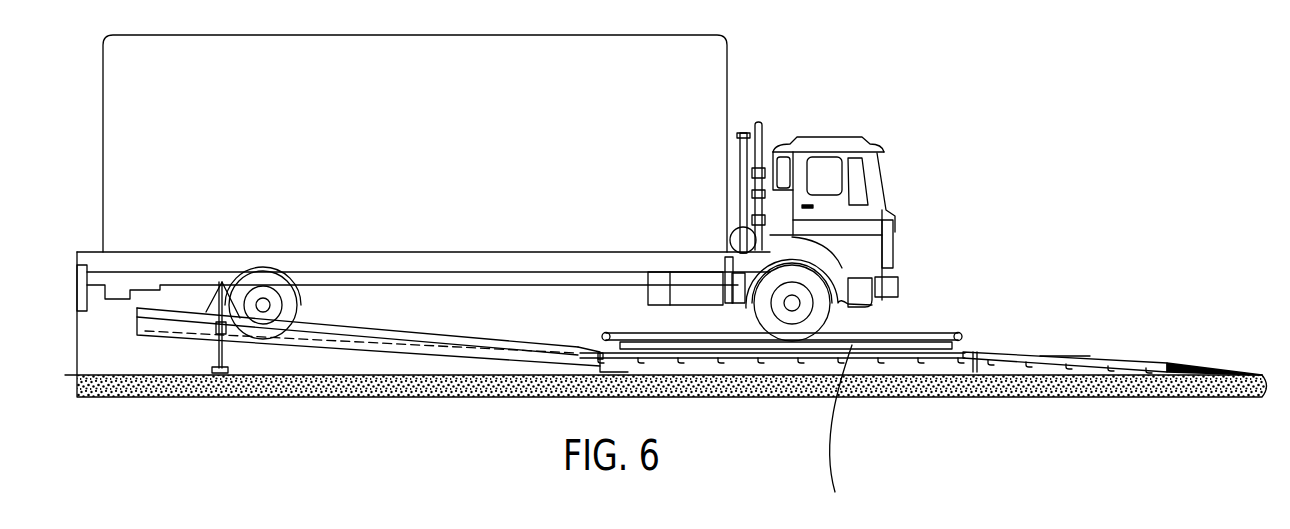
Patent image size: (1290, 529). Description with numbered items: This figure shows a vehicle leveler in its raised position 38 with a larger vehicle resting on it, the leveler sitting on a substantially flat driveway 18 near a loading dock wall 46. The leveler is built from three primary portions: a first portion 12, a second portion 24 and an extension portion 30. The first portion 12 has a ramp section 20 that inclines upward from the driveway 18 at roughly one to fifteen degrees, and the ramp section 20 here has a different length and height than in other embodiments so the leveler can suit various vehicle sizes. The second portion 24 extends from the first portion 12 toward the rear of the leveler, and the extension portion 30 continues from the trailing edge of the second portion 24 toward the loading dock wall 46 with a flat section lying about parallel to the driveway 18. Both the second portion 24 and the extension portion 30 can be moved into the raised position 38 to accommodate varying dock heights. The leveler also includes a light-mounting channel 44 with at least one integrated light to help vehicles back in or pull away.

The first portion 12 is at (963, 343).
The driveway 18 is at (1122, 382).
The ramp section 20 is at (1062, 357).
The second portion 24 is at (462, 350).
The extension portion 30 is at (183, 323).
The raised position 38 is at (210, 328).
The light-mounting channel 44 is at (904, 337).
The loading dock wall 46 is at (58, 268).